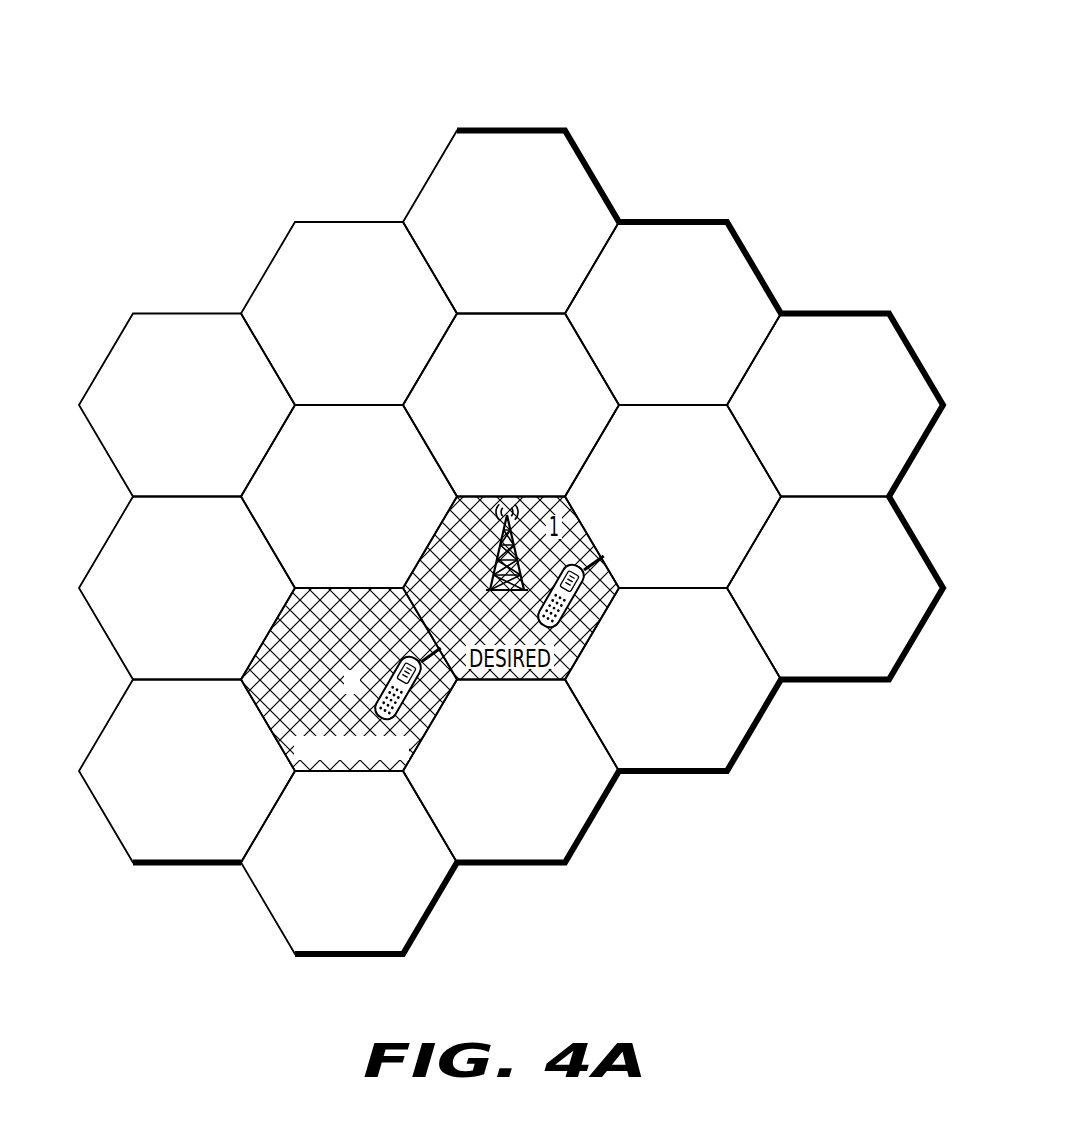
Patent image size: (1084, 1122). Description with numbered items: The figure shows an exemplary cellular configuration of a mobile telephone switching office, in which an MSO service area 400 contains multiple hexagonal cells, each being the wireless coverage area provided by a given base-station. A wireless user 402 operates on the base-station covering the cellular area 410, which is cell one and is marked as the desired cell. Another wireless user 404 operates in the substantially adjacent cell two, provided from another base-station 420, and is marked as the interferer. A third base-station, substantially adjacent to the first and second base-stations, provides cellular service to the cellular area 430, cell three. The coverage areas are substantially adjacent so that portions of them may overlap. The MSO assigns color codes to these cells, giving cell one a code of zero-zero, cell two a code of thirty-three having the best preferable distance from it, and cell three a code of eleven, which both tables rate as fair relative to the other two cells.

The MSO service area 400 is at (760, 82).
The wireless user 402 is at (600, 607).
The wireless user 404 is at (420, 698).
The cellular area 410 is at (457, 627).
The base-station 420 is at (397, 633).
The cellular area 430 is at (332, 465).